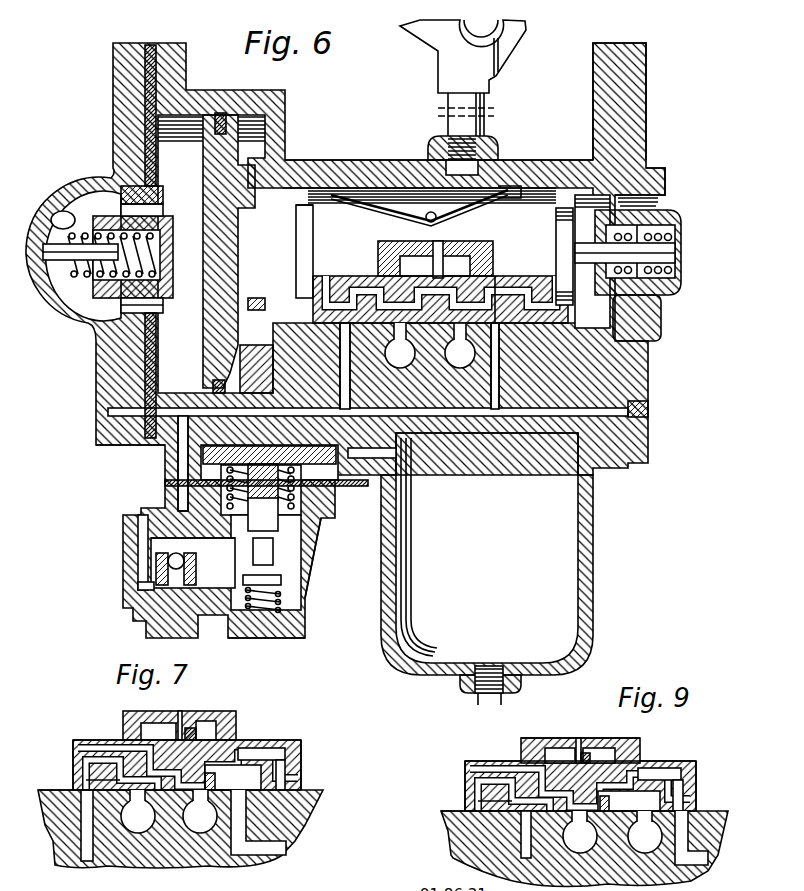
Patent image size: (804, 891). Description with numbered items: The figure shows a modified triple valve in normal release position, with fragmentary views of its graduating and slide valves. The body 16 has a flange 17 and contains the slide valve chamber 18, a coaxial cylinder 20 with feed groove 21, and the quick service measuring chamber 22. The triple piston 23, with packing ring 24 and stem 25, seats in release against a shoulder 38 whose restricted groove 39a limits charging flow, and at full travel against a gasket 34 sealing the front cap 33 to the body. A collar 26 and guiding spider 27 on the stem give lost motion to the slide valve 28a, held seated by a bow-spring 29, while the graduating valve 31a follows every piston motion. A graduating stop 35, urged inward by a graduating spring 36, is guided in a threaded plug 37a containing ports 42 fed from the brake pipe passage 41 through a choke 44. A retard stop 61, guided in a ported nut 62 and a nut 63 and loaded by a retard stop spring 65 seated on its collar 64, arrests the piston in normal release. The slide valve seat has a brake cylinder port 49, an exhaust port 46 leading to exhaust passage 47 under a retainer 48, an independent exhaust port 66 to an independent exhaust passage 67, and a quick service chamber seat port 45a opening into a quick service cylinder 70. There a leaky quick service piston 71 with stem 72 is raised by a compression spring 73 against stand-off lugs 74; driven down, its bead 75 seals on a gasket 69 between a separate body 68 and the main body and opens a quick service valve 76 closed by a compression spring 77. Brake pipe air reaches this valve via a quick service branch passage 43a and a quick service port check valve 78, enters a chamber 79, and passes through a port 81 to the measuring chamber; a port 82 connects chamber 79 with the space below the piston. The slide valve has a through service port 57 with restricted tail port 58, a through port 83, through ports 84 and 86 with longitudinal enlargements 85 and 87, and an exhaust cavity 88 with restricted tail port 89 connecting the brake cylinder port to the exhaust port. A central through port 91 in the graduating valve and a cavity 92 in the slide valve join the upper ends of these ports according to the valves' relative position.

In FIG. 6, the body 16 is at (393, 152).
In FIG. 6, the flange 17 is at (587, 58).
In FIG. 6, the slide valve chamber 18 is at (312, 186).
In FIG. 6, the cylinder 20 is at (211, 143).
In FIG. 6, the feed groove 21 is at (216, 105).
In FIG. 6, the quick service measuring chamber 22 is at (487, 569).
In FIG. 6, the triple piston 23 is at (198, 322).
In FIG. 6, the packing ring 24 is at (205, 378).
In FIG. 6, the stem 25 is at (290, 243).
In FIG. 6, the collar 26 is at (290, 260).
In FIG. 6, the guiding spider 27 is at (550, 208).
In FIG. 6, the slide valve 28a is at (558, 275).
In FIG. 7, the slide valve 28a is at (295, 752).
In FIG. 9, the slide valve 28a is at (690, 780).
In FIG. 6, the bow-spring 29 is at (362, 200).
In FIG. 6, the graduating valve 31a is at (417, 257).
In FIG. 7, the graduating valve 31a is at (196, 721).
In FIG. 9, the graduating valve 31a is at (580, 726).
In FIG. 6, the front cap 33 is at (62, 308).
In FIG. 6, the gasket 34 is at (137, 118).
In FIG. 6, the graduating stop 35 is at (165, 228).
In FIG. 6, the graduating spring 36 is at (55, 210).
In FIG. 6, the threaded plug 37a is at (157, 189).
In FIG. 6, the shoulder 38 is at (233, 326).
In FIG. 6, the groove 39a is at (274, 202).
In FIG. 6, the brake pipe passage 41 is at (530, 402).
In FIG. 6, the ports 42 is at (113, 201).
In FIG. 6, the quick service branch passage 43a is at (157, 476).
In FIG. 6, the choke 44 is at (640, 404).
In FIG. 6, the quick service chamber seat port 45a is at (262, 372).
In FIG. 7, the quick service chamber seat port 45a is at (79, 854).
In FIG. 9, the quick service chamber seat port 45a is at (517, 851).
In FIG. 6, the exhaust port 46 is at (460, 402).
In FIG. 7, the exhaust port 46 is at (200, 811).
In FIG. 9, the exhaust port 46 is at (645, 832).
In FIG. 6, the exhaust passage 47 is at (470, 157).
In FIG. 7, the exhaust passage 47 is at (193, 826).
In FIG. 9, the exhaust passage 47 is at (636, 858).
In FIG. 6, the retainer 48 is at (443, 60).
In FIG. 6, the brake cylinder port 49 is at (489, 326).
In FIG. 7, the brake cylinder port 49 is at (232, 813).
In FIG. 9, the brake cylinder port 49 is at (688, 836).
In FIG. 7, the through service port 57 is at (288, 740).
In FIG. 9, the through service port 57 is at (689, 766).
In FIG. 7, the restricted tail port 58 is at (242, 742).
In FIG. 9, the restricted tail port 58 is at (640, 762).
In FIG. 6, the retard stop 61 is at (592, 261).
In FIG. 6, the ported nut 62 is at (660, 184).
In FIG. 6, the nut 63 is at (700, 215).
In FIG. 6, the collar 64 is at (655, 300).
In FIG. 6, the retard stop spring 65 is at (667, 241).
In FIG. 6, the independent exhaust port 66 is at (425, 402).
In FIG. 7, the independent exhaust port 66 is at (138, 811).
In FIG. 9, the independent exhaust port 66 is at (580, 832).
In FIG. 6, the independent exhaust passage 67 is at (400, 345).
In FIG. 7, the independent exhaust passage 67 is at (126, 826).
In FIG. 9, the independent exhaust passage 67 is at (574, 847).
In FIG. 6, the separate body 68 is at (313, 540).
In FIG. 6, the gasket 69 is at (187, 476).
In FIG. 6, the quick service cylinder 70 is at (385, 458).
In FIG. 6, the quick service piston 71 is at (178, 450).
In FIG. 6, the stem 72 is at (255, 508).
In FIG. 6, the compression spring 73 is at (283, 497).
In FIG. 6, the stand-off lugs 74 is at (100, 426).
In FIG. 6, the bead 75 is at (175, 462).
In FIG. 6, the quick service valve 76 is at (280, 588).
In FIG. 6, the compression spring 77 is at (262, 628).
In FIG. 6, the quick service port check valve 78 is at (152, 565).
In FIG. 6, the chamber 79 is at (273, 568).
In FIG. 6, the port 81 is at (388, 444).
In FIG. 6, the port 82 is at (217, 513).
In FIG. 7, the through port 83 is at (68, 750).
In FIG. 9, the through port 83 is at (458, 770).
In FIG. 7, the through port 84 is at (95, 745).
In FIG. 9, the through port 84 is at (506, 760).
In FIG. 7, the longitudinal enlargement 85 is at (95, 772).
In FIG. 9, the longitudinal enlargement 85 is at (468, 792).
In FIG. 7, the through port 86 is at (152, 718).
In FIG. 9, the through port 86 is at (605, 752).
In FIG. 7, the longitudinal enlargement 87 is at (158, 790).
In FIG. 9, the longitudinal enlargement 87 is at (546, 800).
In FIG. 7, the exhaust cavity 88 is at (233, 777).
In FIG. 9, the exhaust cavity 88 is at (629, 802).
In FIG. 7, the restricted tail port 89 is at (222, 780).
In FIG. 9, the restricted tail port 89 is at (616, 804).
In FIG. 7, the central through port 91 is at (173, 706).
In FIG. 9, the central through port 91 is at (570, 732).
In FIG. 7, the cavity 92 is at (125, 740).
In FIG. 9, the cavity 92 is at (524, 745).